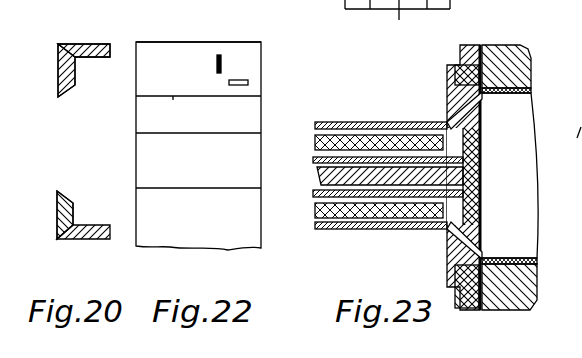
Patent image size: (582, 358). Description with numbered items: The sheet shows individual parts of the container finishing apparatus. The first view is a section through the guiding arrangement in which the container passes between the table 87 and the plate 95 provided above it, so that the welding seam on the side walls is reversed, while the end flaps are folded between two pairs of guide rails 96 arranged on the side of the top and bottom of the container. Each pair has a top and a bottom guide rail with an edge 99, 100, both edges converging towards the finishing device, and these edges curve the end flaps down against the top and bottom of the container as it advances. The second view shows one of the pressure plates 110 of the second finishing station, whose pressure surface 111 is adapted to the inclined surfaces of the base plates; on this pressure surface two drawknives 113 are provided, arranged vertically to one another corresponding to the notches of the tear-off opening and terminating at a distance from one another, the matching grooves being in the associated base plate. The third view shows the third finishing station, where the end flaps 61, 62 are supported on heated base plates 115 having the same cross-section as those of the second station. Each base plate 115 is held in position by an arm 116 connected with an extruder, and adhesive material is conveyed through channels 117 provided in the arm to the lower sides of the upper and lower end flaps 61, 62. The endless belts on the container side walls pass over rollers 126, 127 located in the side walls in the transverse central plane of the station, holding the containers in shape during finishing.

In FIG. 20, the plate 95 is at (91, 49).
In FIG. 20, the guide rail 96 is at (63, 60).
In FIG. 20, the edge of bottom guide rail 100 is at (62, 86).
In FIG. 20, the edge of top guide rail 99 is at (61, 197).
In FIG. 20, the table 87 is at (88, 241).
In FIG. 22, the pressure plate 110 is at (266, 47).
In FIG. 22, the pressure surface 111 is at (182, 49).
In FIG. 22, the drawknife 113 is at (222, 62).
In FIG. 23, the end flap 61 is at (448, 99).
In FIG. 23, the end flap 62 is at (470, 228).
In FIG. 23, the base plate 115 is at (480, 180).
In FIG. 23, the arm 116 is at (321, 176).
In FIG. 23, the channel 117 is at (319, 160).
In FIG. 23, the roller 126 is at (511, 55).
In FIG. 23, the roller 127 is at (512, 293).